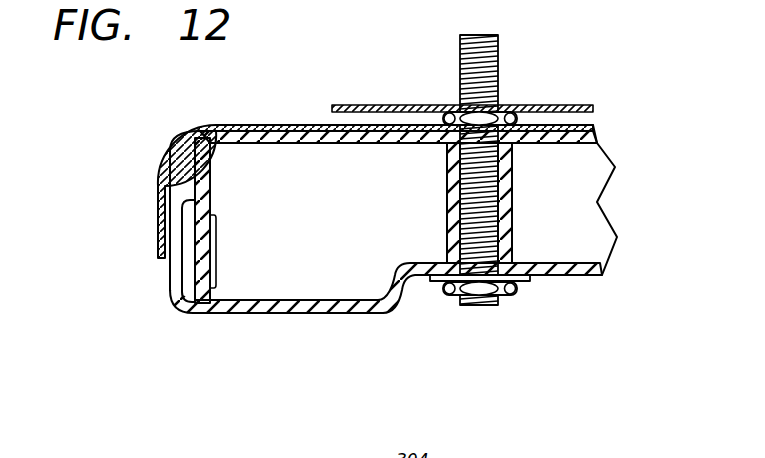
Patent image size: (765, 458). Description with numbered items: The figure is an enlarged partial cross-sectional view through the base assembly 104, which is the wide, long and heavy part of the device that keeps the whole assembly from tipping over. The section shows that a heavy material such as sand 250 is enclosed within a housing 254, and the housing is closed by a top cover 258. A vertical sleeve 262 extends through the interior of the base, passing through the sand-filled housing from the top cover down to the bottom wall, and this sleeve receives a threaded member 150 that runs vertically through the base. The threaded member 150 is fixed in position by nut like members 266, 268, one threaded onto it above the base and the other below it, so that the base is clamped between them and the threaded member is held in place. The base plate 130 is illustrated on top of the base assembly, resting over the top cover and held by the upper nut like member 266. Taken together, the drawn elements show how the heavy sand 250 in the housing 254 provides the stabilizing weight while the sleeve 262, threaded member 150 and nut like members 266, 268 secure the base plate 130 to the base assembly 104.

The base assembly 104 is at (425, 211).
The base plate 130 is at (580, 104).
The threaded member 150 is at (500, 55).
The sand 250 is at (567, 245).
The housing 254 is at (272, 314).
The top cover 258 is at (252, 127).
The vertical sleeve 262 is at (512, 203).
The nut like member 266 is at (527, 110).
The nut like member 268 is at (508, 290).